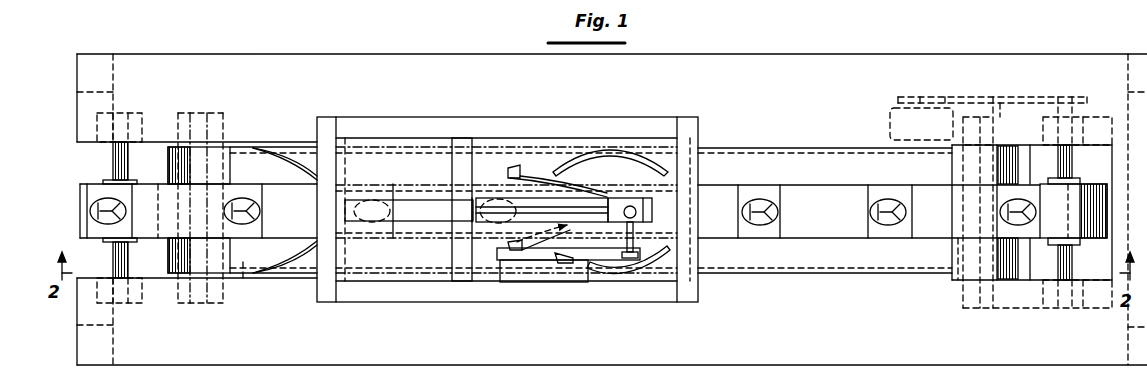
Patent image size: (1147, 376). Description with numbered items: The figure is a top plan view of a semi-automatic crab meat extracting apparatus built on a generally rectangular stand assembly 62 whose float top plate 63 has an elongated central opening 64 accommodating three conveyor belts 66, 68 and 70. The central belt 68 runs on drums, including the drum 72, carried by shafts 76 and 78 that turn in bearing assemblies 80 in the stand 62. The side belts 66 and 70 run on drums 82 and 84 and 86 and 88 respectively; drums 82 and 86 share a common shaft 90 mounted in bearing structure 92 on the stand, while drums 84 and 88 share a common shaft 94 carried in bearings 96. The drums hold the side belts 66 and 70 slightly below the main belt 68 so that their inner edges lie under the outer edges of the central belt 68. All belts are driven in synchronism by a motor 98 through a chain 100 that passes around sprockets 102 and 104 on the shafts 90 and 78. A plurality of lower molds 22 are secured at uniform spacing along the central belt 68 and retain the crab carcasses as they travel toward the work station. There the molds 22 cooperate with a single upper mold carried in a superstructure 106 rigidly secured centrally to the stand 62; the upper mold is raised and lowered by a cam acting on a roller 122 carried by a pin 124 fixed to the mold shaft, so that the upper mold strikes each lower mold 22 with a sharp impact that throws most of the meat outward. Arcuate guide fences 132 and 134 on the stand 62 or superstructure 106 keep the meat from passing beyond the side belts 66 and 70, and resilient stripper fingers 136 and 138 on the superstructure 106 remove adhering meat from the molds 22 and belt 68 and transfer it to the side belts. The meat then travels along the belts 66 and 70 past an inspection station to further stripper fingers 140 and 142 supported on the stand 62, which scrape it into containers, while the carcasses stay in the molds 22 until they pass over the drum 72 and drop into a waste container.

The lower mold 22 is at (92, 224).
The stand assembly 62 is at (835, 57).
The float top plate 63 is at (786, 57).
The elongated central opening 64 is at (1033, 149).
The side conveyor belt 66 is at (812, 157).
The central conveyor belt 68 is at (847, 197).
The side conveyor belt 70 is at (855, 258).
The drum 72 is at (161, 236).
The shaft 76 is at (113, 160).
The shaft 78 is at (1070, 164).
The bearing assembly 80 is at (131, 118).
The drum 82 is at (957, 168).
The drum 84 is at (230, 162).
The drum 86 is at (955, 255).
The drum 88 is at (242, 268).
The common shaft 90 is at (995, 137).
The bearing structure 92 is at (968, 122).
The common shaft 94 is at (213, 119).
The bearings 96 is at (178, 119).
The motor 98 is at (902, 98).
The chain 100 is at (945, 98).
The sprocket 102 is at (993, 107).
The sprocket 104 is at (1073, 98).
The superstructure 106 is at (435, 132).
The roller 122 is at (630, 262).
The pin 124 is at (637, 225).
The arcuate guide fence 132 is at (610, 150).
The arcuate guide fence 134 is at (670, 262).
The resilient stripper finger 136 is at (540, 183).
The resilient stripper finger 138 is at (537, 257).
The stripper finger 140 is at (277, 165).
The stripper finger 142 is at (283, 253).